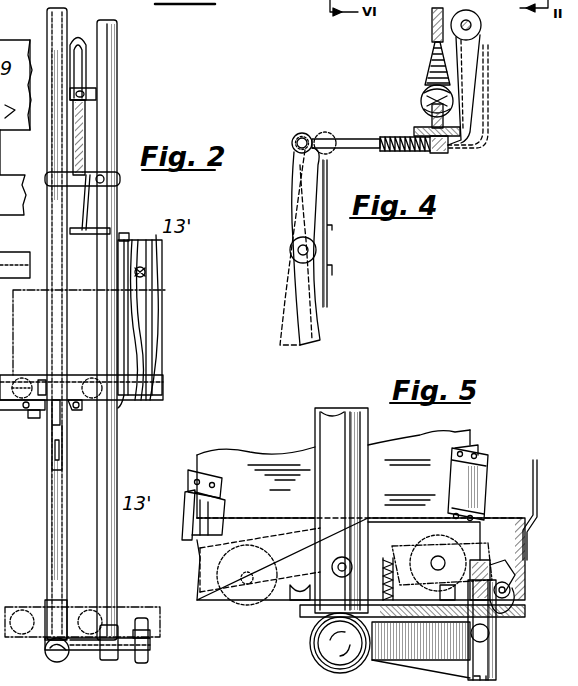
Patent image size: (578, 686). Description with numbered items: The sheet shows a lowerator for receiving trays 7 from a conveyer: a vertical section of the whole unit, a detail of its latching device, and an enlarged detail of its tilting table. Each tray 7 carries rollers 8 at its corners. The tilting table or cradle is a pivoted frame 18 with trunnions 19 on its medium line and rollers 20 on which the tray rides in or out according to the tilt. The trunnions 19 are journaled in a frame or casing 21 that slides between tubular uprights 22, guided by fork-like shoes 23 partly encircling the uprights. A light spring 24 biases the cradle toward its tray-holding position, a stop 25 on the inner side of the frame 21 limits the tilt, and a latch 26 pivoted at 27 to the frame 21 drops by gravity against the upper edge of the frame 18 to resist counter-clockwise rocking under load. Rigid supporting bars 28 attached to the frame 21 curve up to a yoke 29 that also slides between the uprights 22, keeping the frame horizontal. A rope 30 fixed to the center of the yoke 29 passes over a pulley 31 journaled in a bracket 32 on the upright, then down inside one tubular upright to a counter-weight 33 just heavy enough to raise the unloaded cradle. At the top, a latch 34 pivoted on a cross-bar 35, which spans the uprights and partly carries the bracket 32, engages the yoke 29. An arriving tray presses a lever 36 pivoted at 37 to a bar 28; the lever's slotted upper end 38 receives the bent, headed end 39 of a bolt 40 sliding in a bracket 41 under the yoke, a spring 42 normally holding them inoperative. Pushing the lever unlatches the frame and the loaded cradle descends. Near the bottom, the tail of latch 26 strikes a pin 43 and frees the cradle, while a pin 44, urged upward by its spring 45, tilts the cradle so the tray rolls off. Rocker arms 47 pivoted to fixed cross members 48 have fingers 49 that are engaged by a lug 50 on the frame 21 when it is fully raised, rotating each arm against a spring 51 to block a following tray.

In FIG. 5, the tray 7 is at (428, 445).
In FIG. 5, the rollers 8 is at (490, 472).
In FIG. 5, the pivoted frame or table 18 is at (468, 530).
In FIG. 5, the trunnions 19 is at (338, 575).
In FIG. 5, the rollers 20 is at (256, 598).
In FIG. 2, the frame or casing 21 is at (130, 398).
In FIG. 5, the frame or casing 21 is at (198, 556).
In FIG. 2, the uprights 22 is at (117, 450).
In FIG. 5, the uprights 22 is at (341, 510).
In FIG. 2, the fork-like shoes 23 is at (70, 378).
In FIG. 5, the fork-like shoes 23 is at (312, 531).
In FIG. 5, the spring 24 is at (392, 598).
In FIG. 5, the stop 25 is at (448, 600).
In FIG. 5, the latch 26 is at (510, 572).
In FIG. 5, the pivot 27 is at (510, 598).
In FIG. 2, the supporting bars 28 is at (150, 292).
In FIG. 5, the supporting bars 28 is at (536, 484).
In FIG. 2, the yoke 29 is at (100, 226).
In FIG. 4, the yoke 29 is at (414, 130).
In FIG. 2, the rope or cord 30 is at (90, 140).
In FIG. 4, the rope or cord 30 is at (432, 24).
In FIG. 2, the pulley 31 is at (80, 40).
In FIG. 2, the bracket 32 is at (92, 94).
In FIG. 2, the counter-weight 33 is at (55, 545).
In FIG. 2, the latch 34 is at (92, 205).
In FIG. 4, the latch 34 is at (468, 70).
In FIG. 2, the cross-bar 35 is at (104, 179).
In FIG. 4, the cross-bar 35 is at (472, 25).
In FIG. 2, the lever 36 is at (136, 347).
In FIG. 4, the lever 36 is at (297, 320).
In FIG. 2, the pivot 37 is at (146, 270).
In FIG. 4, the slot 38 is at (292, 150).
In FIG. 4, the bent and headed end 39 is at (297, 137).
In FIG. 4, the bolt 40 is at (340, 139).
In FIG. 4, the bracket 41 is at (440, 153).
In FIG. 4, the spring 42 is at (400, 151).
In FIG. 5, the pin 43 is at (496, 640).
In FIG. 5, the pin 44 is at (492, 560).
In FIG. 5, the spring 45 is at (476, 640).
In FIG. 2, the rocker arms 47 is at (14, 410).
In FIG. 2, the cross members 48 is at (12, 179).
In FIG. 2, the finger 49 is at (42, 378).
In FIG. 2, the lug 50 is at (16, 118).
In FIG. 5, the lug 50 is at (322, 620).
In FIG. 2, the spring 51 is at (48, 418).